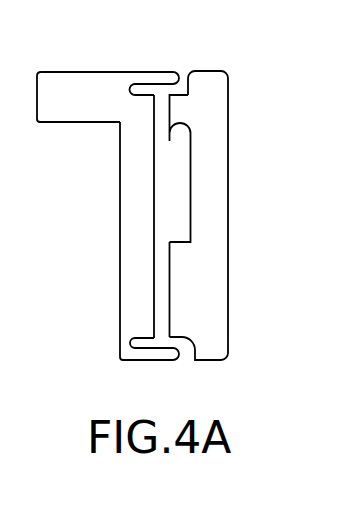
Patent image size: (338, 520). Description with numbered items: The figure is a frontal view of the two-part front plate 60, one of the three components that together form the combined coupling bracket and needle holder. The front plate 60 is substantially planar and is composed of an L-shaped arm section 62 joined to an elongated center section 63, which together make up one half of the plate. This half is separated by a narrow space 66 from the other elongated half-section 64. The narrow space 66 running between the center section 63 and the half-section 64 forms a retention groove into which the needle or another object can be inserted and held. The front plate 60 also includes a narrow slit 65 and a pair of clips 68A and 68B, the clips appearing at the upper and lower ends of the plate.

The front plate 60 is at (228, 187).
The L-shaped arm section 62 is at (62, 95).
The elongated center section 63 is at (130, 187).
The elongated half-section 64 is at (213, 146).
The narrow slit 65 is at (180, 220).
The narrow space 66 is at (170, 283).
The clip 68A is at (157, 78).
The clip 68B is at (162, 351).